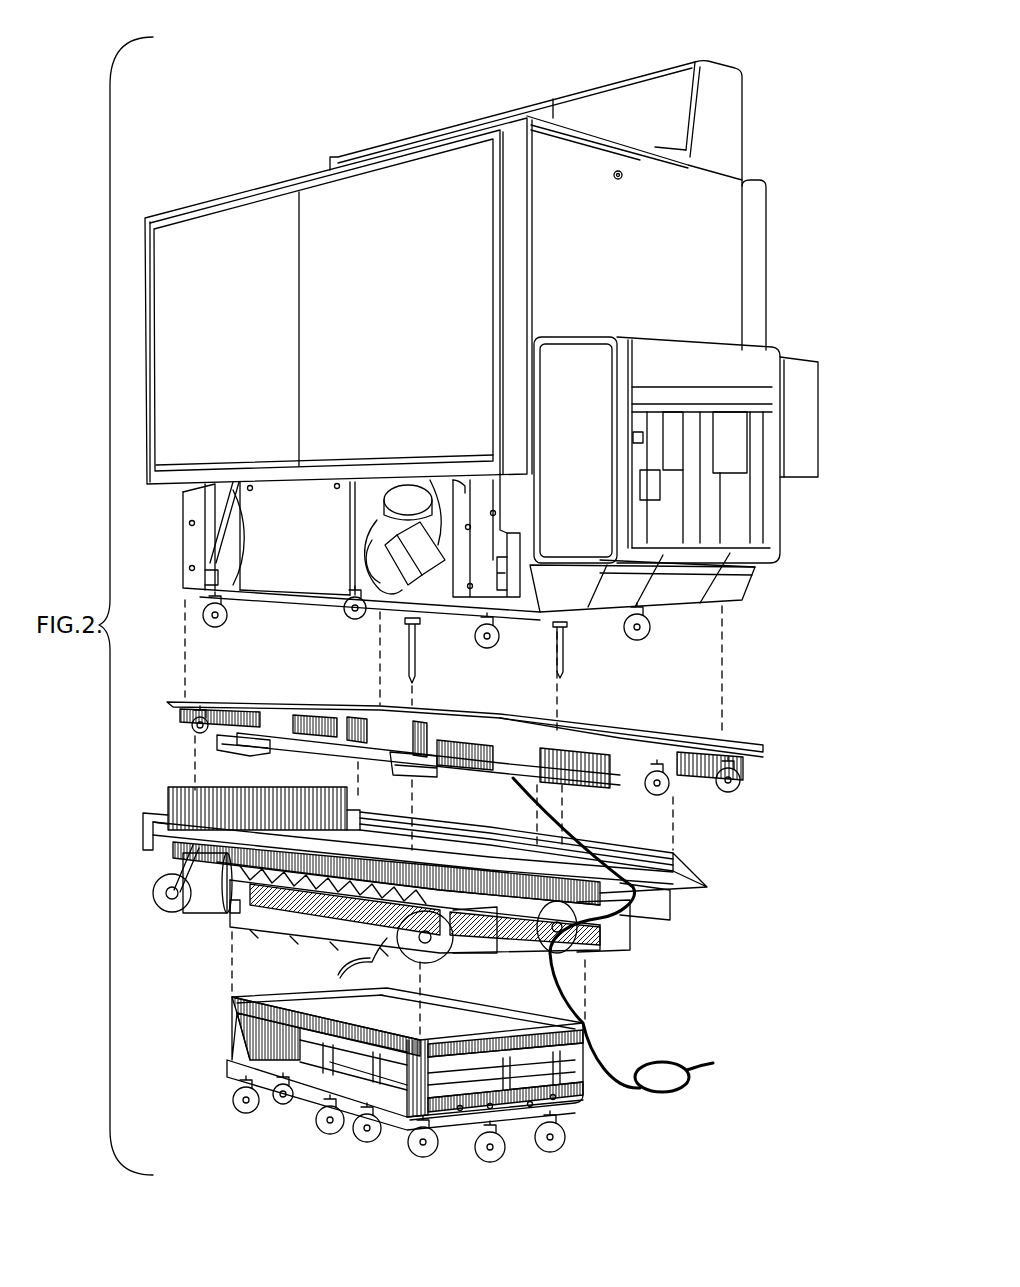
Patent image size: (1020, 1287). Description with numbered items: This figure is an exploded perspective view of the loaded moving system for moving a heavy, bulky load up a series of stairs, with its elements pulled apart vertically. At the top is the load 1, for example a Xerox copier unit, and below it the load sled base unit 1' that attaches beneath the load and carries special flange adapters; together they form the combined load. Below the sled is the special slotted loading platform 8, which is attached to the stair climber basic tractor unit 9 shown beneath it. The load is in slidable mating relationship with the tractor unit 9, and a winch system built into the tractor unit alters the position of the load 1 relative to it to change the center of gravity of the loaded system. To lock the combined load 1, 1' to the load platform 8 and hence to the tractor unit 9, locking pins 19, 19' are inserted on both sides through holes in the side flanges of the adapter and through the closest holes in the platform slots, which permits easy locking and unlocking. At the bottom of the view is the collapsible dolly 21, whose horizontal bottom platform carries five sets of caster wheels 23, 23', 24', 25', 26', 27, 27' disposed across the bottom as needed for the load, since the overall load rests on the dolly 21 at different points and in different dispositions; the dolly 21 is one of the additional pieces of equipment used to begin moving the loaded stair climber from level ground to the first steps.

The load 1 is at (487, 354).
The load sled base unit 1' is at (502, 748).
The slotted loading platform 8 is at (170, 782).
The stair climber basic tractor unit 9 is at (229, 930).
The locking pin 19 is at (450, 656).
The locking pin 19' is at (599, 656).
The collapsible dolly 21 is at (588, 1021).
The caster wheel 23 is at (221, 1094).
The caster wheel 23' is at (275, 1109).
The caster wheel 24' is at (323, 1135).
The caster wheel 25' is at (369, 1146).
The caster wheel 26' is at (428, 1156).
The caster wheel 27 is at (576, 1132).
The caster wheel 27' is at (512, 1152).